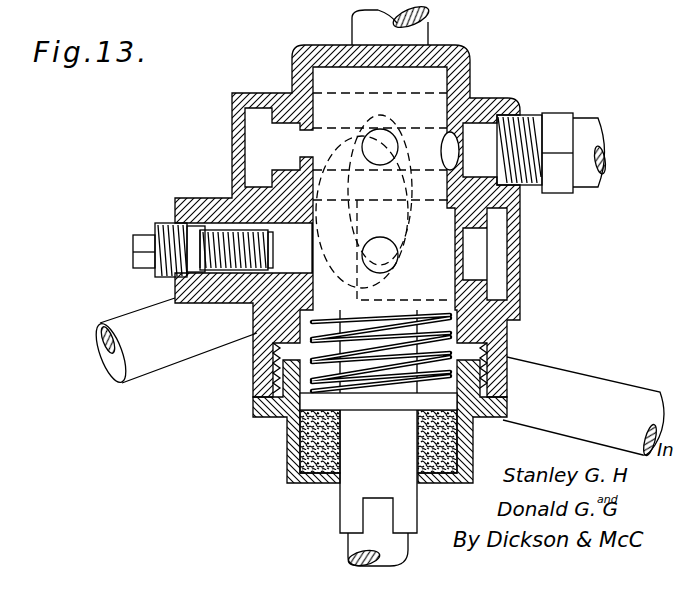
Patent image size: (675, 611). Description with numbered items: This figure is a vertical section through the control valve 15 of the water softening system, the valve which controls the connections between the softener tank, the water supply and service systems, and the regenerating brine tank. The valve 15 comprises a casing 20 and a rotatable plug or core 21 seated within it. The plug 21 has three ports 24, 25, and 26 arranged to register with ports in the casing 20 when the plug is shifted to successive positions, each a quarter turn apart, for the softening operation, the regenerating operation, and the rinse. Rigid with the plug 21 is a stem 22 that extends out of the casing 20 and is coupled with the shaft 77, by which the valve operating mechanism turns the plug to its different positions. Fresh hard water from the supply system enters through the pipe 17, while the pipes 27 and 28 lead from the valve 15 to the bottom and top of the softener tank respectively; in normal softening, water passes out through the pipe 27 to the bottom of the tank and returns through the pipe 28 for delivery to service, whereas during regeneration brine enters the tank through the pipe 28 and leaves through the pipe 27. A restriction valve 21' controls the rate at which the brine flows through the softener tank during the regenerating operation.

The pipe 28 is at (424, 28).
The casing 20 is at (487, 96).
The pipe 17 is at (574, 118).
The rotatable plug 21 is at (345, 173).
The restriction valve 21' is at (203, 210).
The port 24 is at (408, 128).
The port 25 is at (406, 240).
The port 26 is at (357, 290).
The valve 15 is at (173, 347).
The pipe 27 is at (535, 375).
The stem 22 is at (350, 482).
The shaft 77 is at (348, 548).